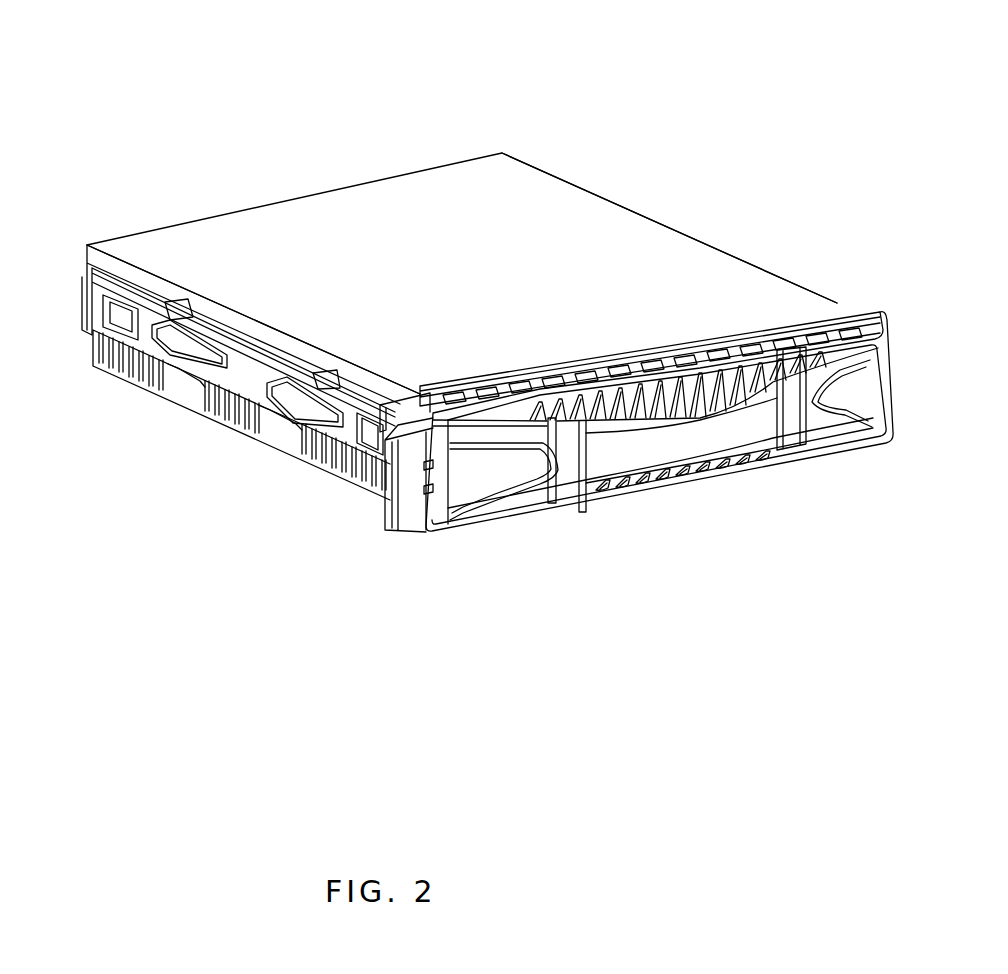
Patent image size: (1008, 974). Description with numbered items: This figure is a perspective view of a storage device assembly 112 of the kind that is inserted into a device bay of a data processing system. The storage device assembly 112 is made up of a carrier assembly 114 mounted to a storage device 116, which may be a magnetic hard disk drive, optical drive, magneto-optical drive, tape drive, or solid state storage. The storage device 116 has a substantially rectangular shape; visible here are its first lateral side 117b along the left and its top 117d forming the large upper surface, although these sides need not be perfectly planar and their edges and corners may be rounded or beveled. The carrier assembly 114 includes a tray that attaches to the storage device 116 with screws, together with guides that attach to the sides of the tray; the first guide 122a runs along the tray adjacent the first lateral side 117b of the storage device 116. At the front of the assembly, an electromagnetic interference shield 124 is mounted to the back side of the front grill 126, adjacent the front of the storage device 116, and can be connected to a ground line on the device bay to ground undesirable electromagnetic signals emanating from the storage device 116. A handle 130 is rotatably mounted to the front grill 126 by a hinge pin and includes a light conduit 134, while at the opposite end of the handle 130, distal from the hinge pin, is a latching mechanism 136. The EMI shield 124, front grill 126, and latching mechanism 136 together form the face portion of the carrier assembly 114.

The storage device assembly 112 is at (806, 64).
The carrier assembly 114 is at (414, 602).
The storage device 116 is at (402, 202).
The first lateral side 117b is at (85, 252).
The top 117d is at (609, 220).
The first guide 122a is at (217, 382).
The electromagnetic interference (EMI) shield 124 is at (667, 338).
The front grill 126 is at (677, 484).
The handle 130 is at (597, 462).
The light conduit 134 is at (492, 493).
The latching mechanism 136 is at (837, 437).